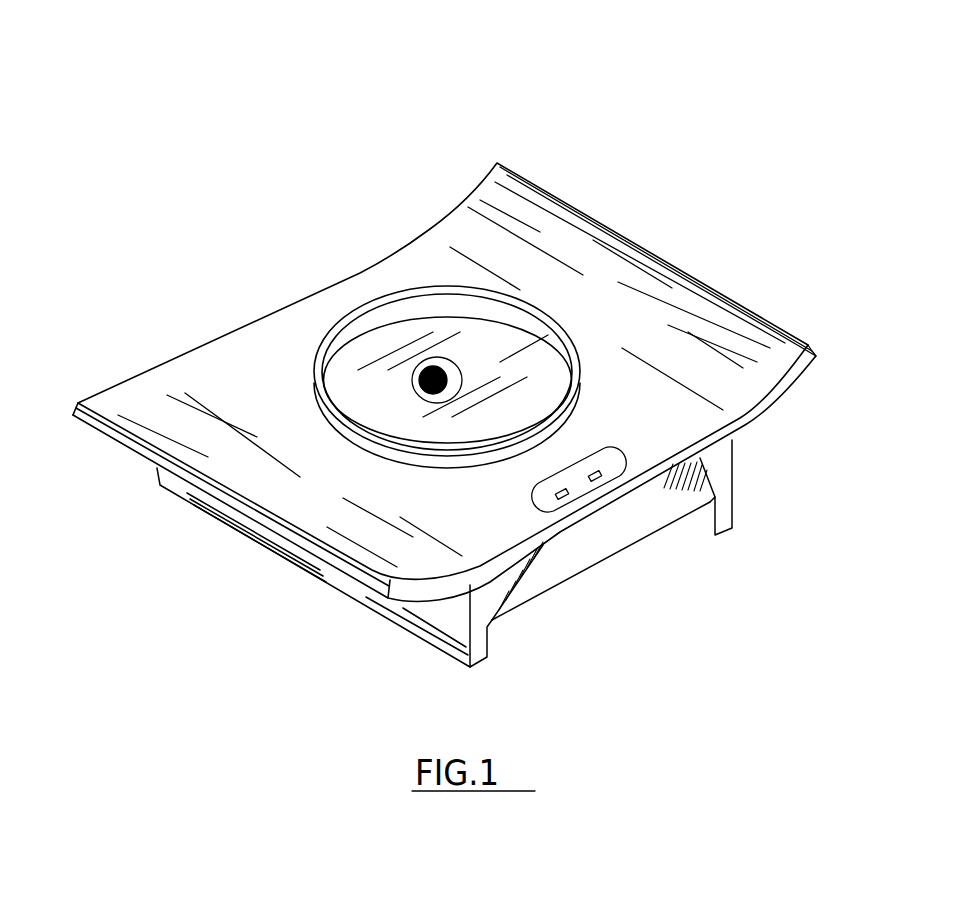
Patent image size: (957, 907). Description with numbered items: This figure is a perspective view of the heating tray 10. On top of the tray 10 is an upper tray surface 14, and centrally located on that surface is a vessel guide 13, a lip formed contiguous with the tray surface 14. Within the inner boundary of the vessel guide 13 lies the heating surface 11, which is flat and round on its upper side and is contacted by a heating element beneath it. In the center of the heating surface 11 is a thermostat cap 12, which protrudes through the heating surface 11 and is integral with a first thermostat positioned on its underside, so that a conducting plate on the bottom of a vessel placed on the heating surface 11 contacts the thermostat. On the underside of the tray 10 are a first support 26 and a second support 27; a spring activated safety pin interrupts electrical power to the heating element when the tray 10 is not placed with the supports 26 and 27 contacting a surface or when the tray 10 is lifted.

The heating tray 10 is at (192, 135).
The heating surface 11 is at (528, 362).
The thermostat cap 12 is at (447, 365).
The vessel guide 13 is at (383, 303).
The tray surface 14 is at (638, 418).
The first support 26 is at (733, 521).
The second support 27 is at (488, 648).